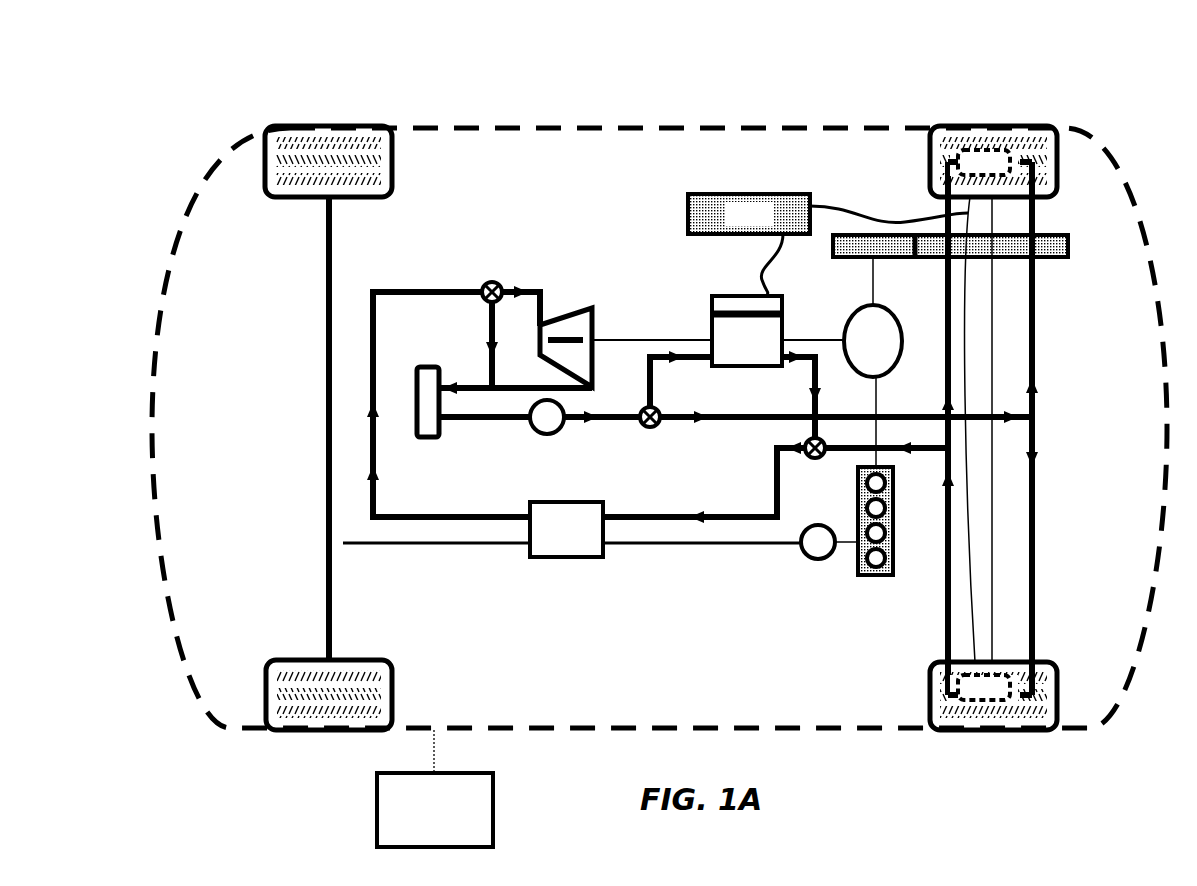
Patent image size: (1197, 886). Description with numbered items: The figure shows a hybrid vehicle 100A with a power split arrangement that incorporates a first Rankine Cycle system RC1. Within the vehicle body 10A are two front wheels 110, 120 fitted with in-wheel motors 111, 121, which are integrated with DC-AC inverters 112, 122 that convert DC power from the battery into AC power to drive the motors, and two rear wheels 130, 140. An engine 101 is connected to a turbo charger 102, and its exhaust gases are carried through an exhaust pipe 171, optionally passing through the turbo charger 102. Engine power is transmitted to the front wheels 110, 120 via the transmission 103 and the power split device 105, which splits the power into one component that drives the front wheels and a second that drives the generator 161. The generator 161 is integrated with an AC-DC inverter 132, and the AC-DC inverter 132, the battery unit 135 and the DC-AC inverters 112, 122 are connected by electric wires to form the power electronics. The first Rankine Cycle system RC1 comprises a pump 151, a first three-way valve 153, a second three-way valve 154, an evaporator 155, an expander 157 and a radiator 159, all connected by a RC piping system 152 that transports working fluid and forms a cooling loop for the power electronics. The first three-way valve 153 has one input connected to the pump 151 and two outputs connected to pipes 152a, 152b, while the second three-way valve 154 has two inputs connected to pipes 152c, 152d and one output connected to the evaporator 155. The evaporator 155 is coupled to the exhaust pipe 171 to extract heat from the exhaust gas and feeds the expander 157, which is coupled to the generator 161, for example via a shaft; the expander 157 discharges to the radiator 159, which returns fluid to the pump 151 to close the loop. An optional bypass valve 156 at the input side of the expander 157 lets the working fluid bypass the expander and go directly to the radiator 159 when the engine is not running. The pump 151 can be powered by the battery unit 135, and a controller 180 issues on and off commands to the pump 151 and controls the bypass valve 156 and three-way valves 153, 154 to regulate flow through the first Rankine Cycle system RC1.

The hybrid vehicle 100A is at (1118, 112).
The vehicle body 10A is at (568, 122).
The rear wheel 130 is at (272, 166).
The rear wheel 140 is at (268, 672).
The front wheel 110 is at (1045, 125).
The in-wheel motor 111 is at (985, 148).
The DC-AC inverter 112 is at (950, 150).
The front wheel 120 is at (1042, 732).
The in-wheel motor 121 is at (987, 712).
The DC-AC inverter 122 is at (950, 732).
The transmission 103 is at (1070, 266).
The battery unit 135 is at (828, 245).
The AC-DC inverter 132 is at (712, 303).
The generator 161 is at (747, 341).
The power split device 105 is at (873, 341).
The first Rankine Cycle system RC1 is at (560, 258).
The bypass valve 156 is at (492, 280).
The expander 157 is at (594, 310).
The radiator 159 is at (415, 390).
The RC piping system 152 is at (385, 472).
The pump 151 is at (538, 432).
The first three-way valve 153 is at (645, 428).
The pipe 152a is at (652, 388).
The pipe 152b is at (724, 425).
The pipe 152c is at (812, 400).
The pipe 152d is at (848, 460).
The second three-way valve 154 is at (811, 462).
The evaporator 155 is at (566, 529).
The exhaust pipe 171 is at (440, 546).
The turbo charger 102 is at (815, 561).
The engine 101 is at (873, 578).
The controller 180 is at (435, 788).